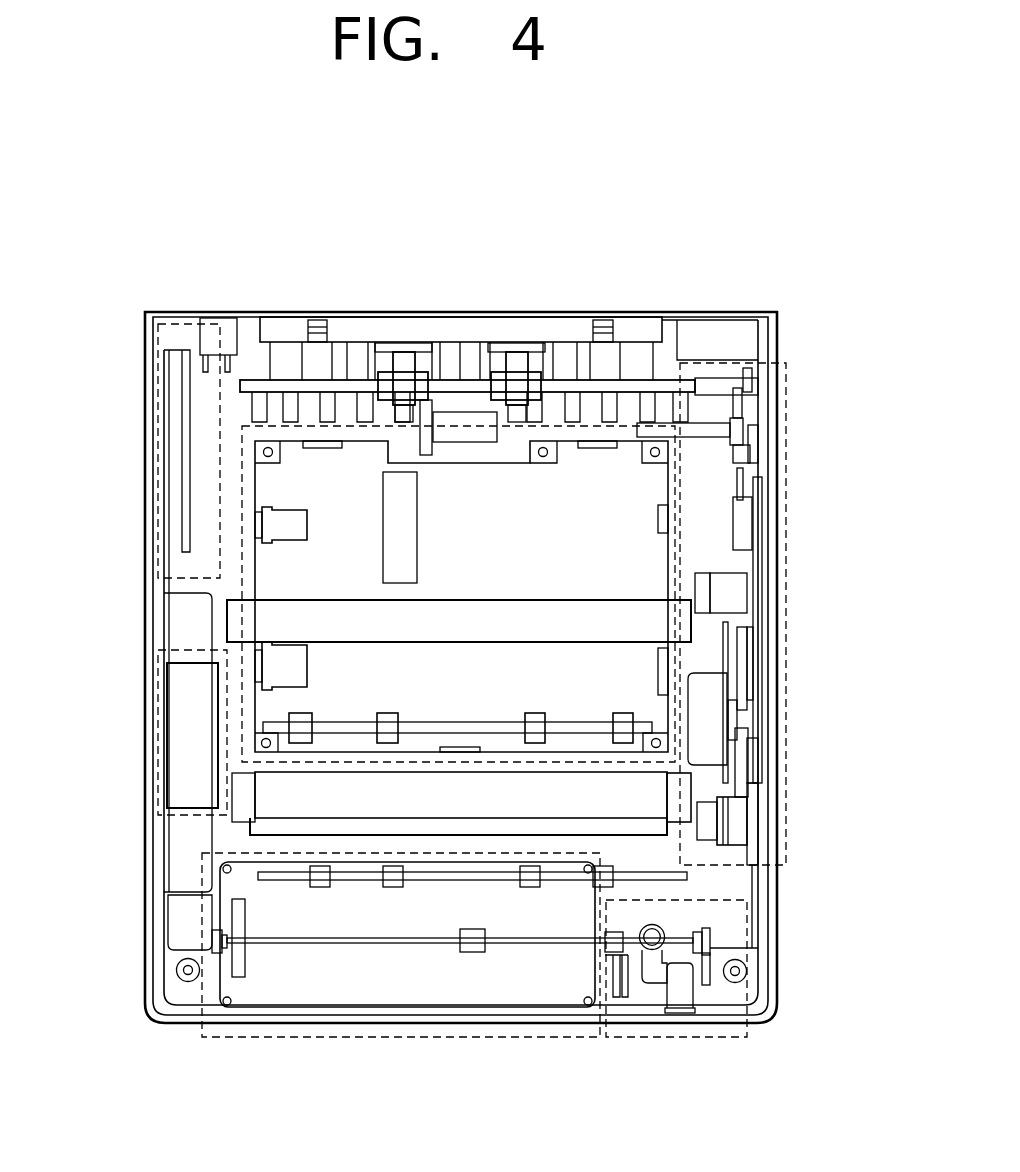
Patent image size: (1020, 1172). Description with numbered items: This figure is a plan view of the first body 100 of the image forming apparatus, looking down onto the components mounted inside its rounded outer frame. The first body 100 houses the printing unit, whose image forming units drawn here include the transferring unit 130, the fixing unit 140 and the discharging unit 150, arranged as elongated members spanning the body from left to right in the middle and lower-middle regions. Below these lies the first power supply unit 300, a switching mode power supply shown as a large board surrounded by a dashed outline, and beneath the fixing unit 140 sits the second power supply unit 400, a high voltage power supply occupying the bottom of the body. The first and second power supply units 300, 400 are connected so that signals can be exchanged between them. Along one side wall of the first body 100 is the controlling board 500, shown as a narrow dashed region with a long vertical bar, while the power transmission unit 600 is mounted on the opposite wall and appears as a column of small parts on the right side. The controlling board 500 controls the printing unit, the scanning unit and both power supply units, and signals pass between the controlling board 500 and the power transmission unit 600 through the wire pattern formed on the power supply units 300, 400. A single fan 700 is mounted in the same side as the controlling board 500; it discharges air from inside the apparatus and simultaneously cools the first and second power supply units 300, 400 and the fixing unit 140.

The first body 100 is at (680, 262).
The transferring unit 130 is at (648, 622).
The fixing unit 140 is at (655, 793).
The discharging unit 150 is at (657, 877).
The first power supply unit 300 is at (600, 548).
The second power supply unit 400 is at (440, 1037).
The controlling board 500 is at (178, 510).
The power transmission unit 600 is at (787, 502).
The fan 700 is at (190, 733).